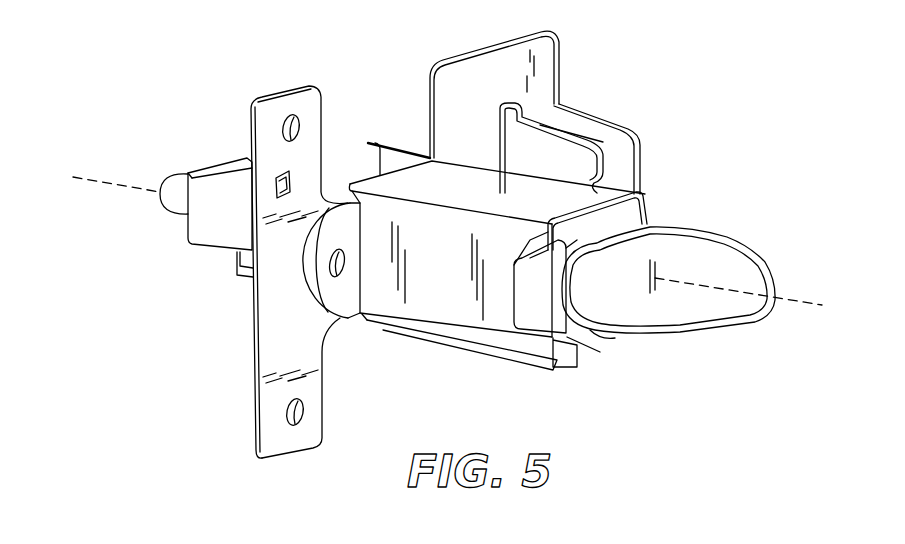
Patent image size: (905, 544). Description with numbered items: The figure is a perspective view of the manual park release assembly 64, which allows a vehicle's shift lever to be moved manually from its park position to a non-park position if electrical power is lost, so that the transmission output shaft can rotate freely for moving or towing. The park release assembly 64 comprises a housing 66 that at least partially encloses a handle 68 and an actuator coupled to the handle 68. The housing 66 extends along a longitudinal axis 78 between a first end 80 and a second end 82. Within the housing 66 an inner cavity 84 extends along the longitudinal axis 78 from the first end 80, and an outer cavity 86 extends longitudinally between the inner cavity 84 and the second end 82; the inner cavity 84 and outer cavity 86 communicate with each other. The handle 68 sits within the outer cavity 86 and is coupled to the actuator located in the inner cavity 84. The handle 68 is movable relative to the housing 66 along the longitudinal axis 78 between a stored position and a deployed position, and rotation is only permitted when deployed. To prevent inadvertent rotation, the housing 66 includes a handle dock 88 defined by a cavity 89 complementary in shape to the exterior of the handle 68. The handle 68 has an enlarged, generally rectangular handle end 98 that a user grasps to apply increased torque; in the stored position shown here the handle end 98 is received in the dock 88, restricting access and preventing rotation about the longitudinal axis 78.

The manual park release assembly 64 is at (198, 58).
The housing 66 is at (498, 187).
The handle 68 is at (664, 202).
The longitudinal axis 78 is at (105, 182).
The first end 80 is at (206, 140).
The second end 82 is at (504, 381).
The inner cavity 84 is at (337, 178).
The outer cavity 86 is at (568, 188).
The handle dock 88 is at (522, 296).
The cavity 89 is at (593, 327).
The handle end 98 is at (633, 300).